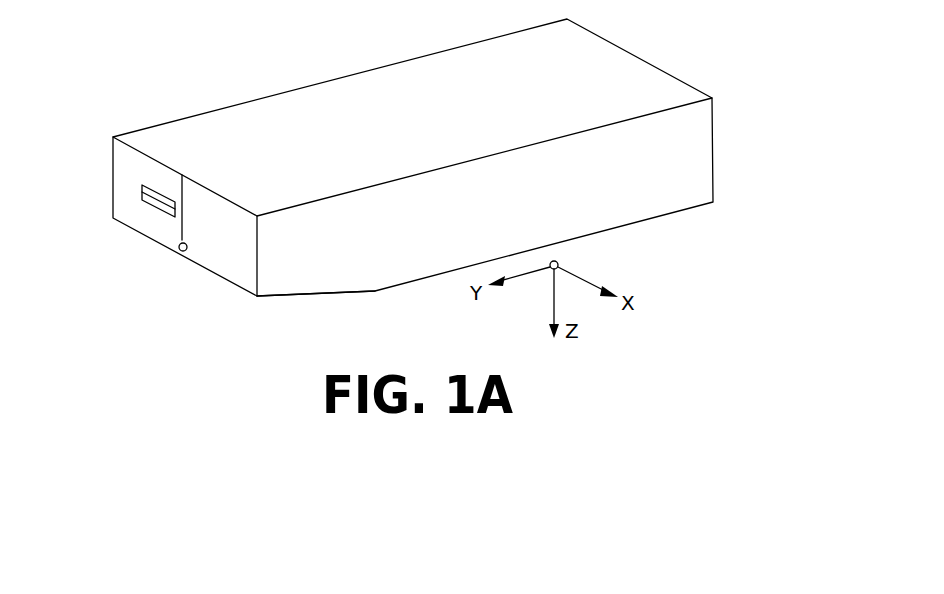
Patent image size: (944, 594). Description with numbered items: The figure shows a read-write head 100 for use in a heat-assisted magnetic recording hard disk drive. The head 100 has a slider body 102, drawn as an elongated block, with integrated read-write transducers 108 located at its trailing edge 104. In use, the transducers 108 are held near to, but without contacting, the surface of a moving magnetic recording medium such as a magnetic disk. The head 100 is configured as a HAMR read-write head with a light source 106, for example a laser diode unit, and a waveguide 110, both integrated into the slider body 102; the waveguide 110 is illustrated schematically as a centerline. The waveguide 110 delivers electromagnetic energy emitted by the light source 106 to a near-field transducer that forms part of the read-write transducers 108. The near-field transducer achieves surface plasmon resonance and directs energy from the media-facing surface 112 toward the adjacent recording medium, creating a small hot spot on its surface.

The read-write head 100 is at (672, 56).
The slider body 102 is at (368, 83).
The trailing edge 104 is at (113, 198).
The light source 106 is at (148, 212).
The read-write transducers 108 is at (181, 274).
The waveguide 110 is at (182, 230).
The media-facing surface 112 is at (254, 298).